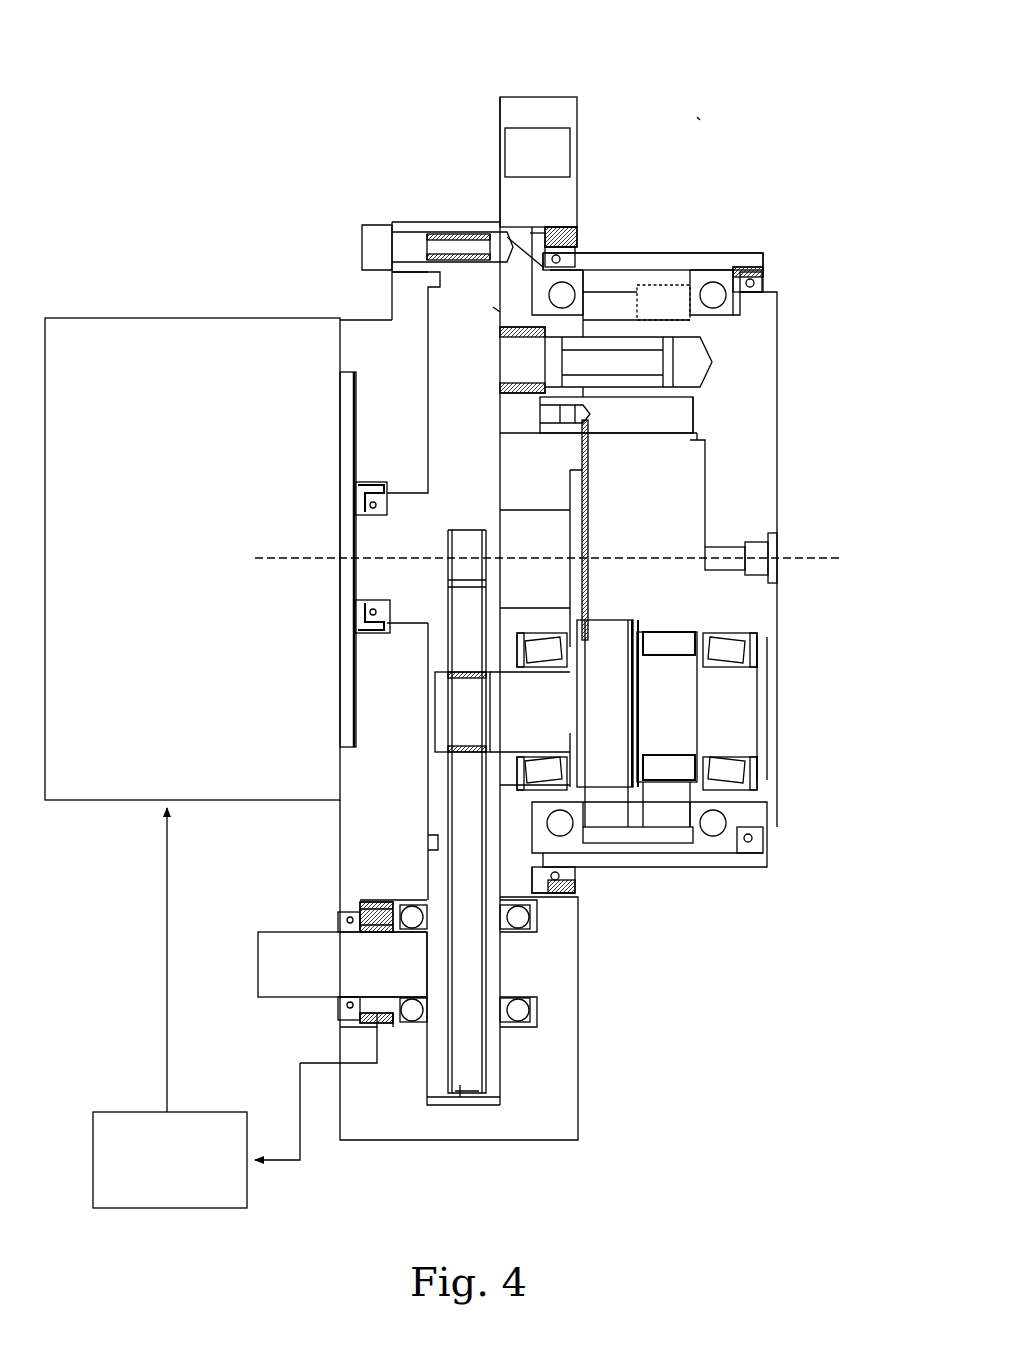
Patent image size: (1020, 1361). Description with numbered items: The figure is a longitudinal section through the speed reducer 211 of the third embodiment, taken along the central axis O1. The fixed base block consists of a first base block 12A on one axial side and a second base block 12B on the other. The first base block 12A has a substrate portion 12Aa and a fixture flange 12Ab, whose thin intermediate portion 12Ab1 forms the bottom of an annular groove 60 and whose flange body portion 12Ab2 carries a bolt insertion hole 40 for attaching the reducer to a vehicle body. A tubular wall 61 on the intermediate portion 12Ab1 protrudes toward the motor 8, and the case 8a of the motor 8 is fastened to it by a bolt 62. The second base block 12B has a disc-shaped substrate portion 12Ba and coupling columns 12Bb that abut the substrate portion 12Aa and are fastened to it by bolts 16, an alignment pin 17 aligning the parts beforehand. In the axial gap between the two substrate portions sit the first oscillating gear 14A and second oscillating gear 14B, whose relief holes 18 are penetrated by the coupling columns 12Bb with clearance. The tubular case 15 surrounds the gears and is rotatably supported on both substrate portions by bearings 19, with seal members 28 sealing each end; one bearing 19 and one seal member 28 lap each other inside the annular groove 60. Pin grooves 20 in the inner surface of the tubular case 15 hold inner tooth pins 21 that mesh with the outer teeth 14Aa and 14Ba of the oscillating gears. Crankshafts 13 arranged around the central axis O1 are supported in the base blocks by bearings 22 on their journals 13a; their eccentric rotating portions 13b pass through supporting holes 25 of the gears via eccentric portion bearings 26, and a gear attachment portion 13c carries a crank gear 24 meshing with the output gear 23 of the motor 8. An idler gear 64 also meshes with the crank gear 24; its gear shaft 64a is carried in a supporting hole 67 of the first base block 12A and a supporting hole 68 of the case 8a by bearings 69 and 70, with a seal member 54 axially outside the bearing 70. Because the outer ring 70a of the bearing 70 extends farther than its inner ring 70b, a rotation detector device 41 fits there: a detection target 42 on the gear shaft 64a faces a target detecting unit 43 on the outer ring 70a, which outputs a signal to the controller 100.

The motor 8 is at (165, 312).
The case 8a is at (392, 306).
The first base block 12A is at (505, 290).
The substrate portion 12Aa is at (512, 457).
The fixture flange 12Ab is at (505, 128).
The intermediate portion 12Ab1 is at (491, 304).
The flange body portion 12Ab2 is at (550, 108).
The second base block 12B is at (784, 332).
The substrate portion 12Ba is at (760, 507).
The coupling columns 12Bb is at (635, 412).
The crankshafts 13 is at (767, 750).
The journals 13a is at (530, 800).
The eccentric rotating portions 13b is at (618, 834).
The gear attachment portion 13c is at (463, 740).
The first oscillating gear 14A is at (603, 757).
The outer teeth 14Aa is at (567, 293).
The second oscillating gear 14B is at (667, 745).
The outer teeth 14Ba is at (680, 253).
The tubular case 15 is at (738, 250).
The bolts 16 is at (510, 353).
The alignment pin 17 is at (700, 418).
The relief holes 18 is at (583, 450).
The bearings 19 is at (507, 233).
The pin grooves 20 is at (625, 283).
The inner tooth pins 21 is at (660, 300).
The bearings 22 is at (530, 645).
The output gear 23 is at (460, 530).
The crank gear 24 is at (463, 585).
The supporting hole 25 is at (585, 655).
The eccentric portion bearing 26 is at (567, 675).
The seal member 28 is at (572, 232).
The bolt insertion hole 40 is at (513, 113).
The rotation detector device 41 is at (340, 935).
The detection target 42 is at (350, 952).
The target detecting unit 43 is at (355, 905).
The seal member 54 is at (345, 918).
The annular groove 60 is at (530, 235).
The tubular wall 61 is at (392, 280).
The bolt 62 is at (363, 246).
The idler gear 64 is at (467, 1082).
The gear shaft 64a is at (325, 985).
The supporting hole 67 is at (522, 1022).
The supporting hole 68 is at (368, 902).
The bearing 69 is at (537, 1025).
The bearing 70 is at (410, 1035).
The outer ring 70a is at (393, 1040).
The inner ring 70b is at (423, 1040).
The controller 100 is at (133, 1112).
The speed reducer 211 is at (702, 115).
The central axis O1 is at (833, 562).